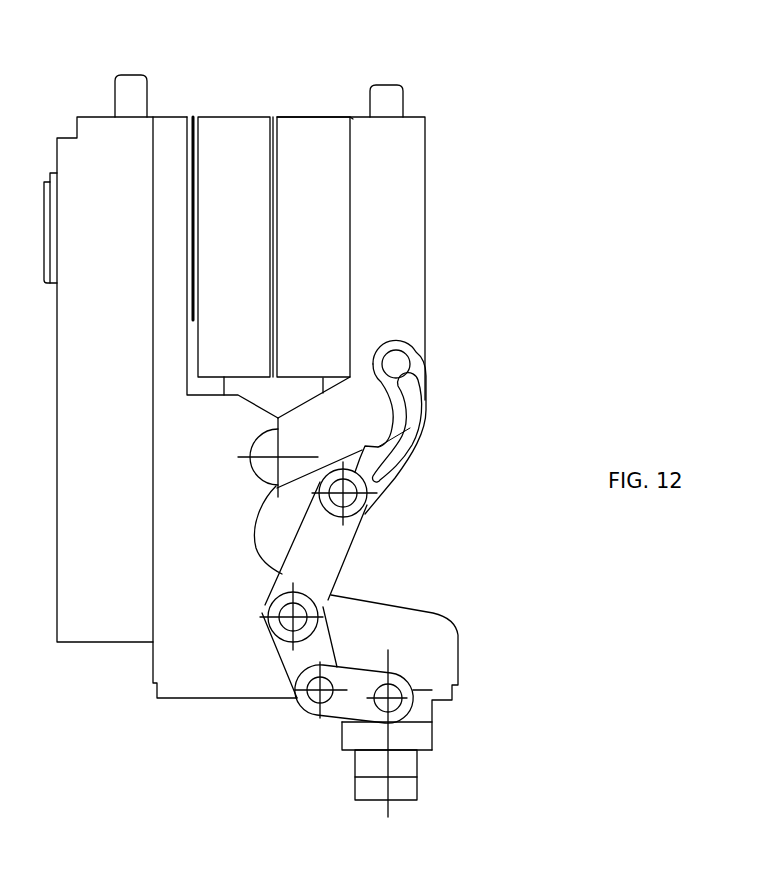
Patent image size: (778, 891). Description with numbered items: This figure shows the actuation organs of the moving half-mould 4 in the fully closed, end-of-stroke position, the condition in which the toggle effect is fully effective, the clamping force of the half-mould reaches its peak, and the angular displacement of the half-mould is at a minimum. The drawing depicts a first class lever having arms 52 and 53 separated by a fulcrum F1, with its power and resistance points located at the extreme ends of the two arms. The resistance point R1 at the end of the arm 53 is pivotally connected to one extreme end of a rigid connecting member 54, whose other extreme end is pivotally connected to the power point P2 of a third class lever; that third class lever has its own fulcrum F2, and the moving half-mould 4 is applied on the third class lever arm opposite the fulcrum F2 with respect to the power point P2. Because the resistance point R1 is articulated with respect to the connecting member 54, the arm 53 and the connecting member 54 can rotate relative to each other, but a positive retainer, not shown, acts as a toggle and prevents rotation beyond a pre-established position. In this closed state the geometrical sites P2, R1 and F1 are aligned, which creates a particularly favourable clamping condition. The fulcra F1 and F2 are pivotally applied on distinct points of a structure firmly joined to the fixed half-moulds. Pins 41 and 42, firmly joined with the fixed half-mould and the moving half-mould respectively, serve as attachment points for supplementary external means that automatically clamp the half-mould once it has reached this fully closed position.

The moving half-mould 4 is at (302, 132).
The pin 41 is at (145, 72).
The pin 42 is at (388, 84).
The power point P2 is at (396, 364).
The rigid connecting member 54 is at (412, 447).
The resistance point R1 is at (370, 505).
The arm 53 is at (348, 563).
The fulcrum F2 is at (262, 468).
The fulcrum F1 is at (267, 636).
The arm 52 is at (282, 673).